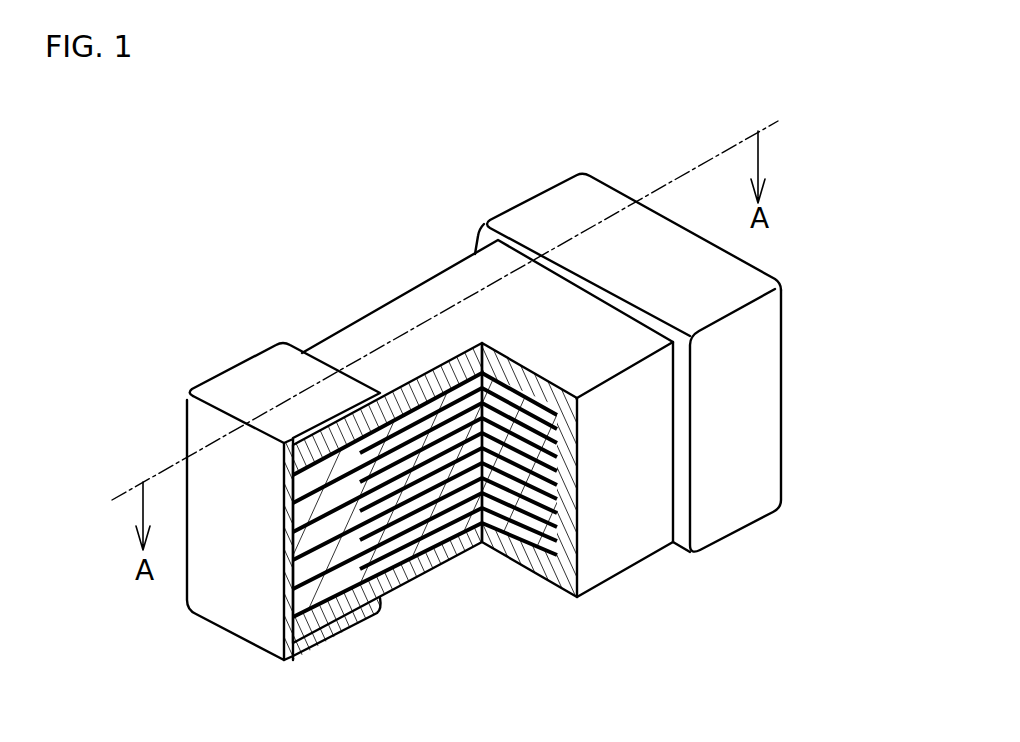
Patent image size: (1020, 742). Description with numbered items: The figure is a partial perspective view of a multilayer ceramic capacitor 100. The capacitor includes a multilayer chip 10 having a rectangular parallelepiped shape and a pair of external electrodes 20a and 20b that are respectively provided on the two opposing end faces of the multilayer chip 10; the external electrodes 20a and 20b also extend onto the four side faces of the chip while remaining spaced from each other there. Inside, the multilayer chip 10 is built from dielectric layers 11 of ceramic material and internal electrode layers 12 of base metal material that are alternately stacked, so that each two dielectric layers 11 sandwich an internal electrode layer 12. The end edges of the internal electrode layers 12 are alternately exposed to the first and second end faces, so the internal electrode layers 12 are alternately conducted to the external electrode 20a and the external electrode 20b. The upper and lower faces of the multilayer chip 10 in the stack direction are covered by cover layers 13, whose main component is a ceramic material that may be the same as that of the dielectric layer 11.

The multilayer ceramic capacitor 100 is at (878, 105).
The multilayer chip 10 is at (341, 326).
The dielectric layer 11 is at (413, 567).
The internal electrode layer 12 is at (450, 540).
The cover layer 13 is at (452, 287).
The external electrode 20a is at (246, 366).
The external electrode 20b is at (538, 212).